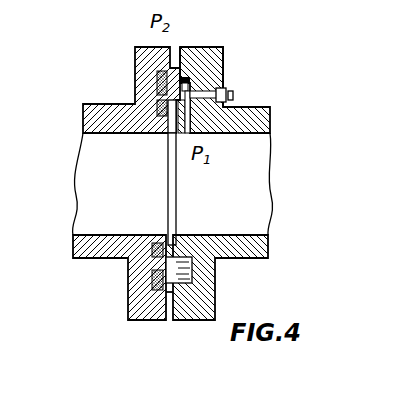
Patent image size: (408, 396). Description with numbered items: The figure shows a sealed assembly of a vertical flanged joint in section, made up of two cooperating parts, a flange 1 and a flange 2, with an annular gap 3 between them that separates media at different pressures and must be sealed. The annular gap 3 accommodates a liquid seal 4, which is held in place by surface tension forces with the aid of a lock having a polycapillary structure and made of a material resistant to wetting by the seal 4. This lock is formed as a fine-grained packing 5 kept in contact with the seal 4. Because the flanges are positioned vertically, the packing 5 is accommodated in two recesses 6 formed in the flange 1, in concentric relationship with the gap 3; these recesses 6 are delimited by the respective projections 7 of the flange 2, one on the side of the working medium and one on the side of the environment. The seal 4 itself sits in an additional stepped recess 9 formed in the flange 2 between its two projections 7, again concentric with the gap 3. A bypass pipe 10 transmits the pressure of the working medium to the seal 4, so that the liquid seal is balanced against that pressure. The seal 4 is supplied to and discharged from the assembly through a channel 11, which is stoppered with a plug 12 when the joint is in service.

The flange 1 is at (142, 110).
The flange 2 is at (225, 77).
The annular gap 3 is at (168, 206).
The liquid seal 4 is at (161, 133).
The fine-grained packing 5 is at (157, 72).
The recess 6 is at (152, 288).
The projection 7 is at (170, 250).
The stepped recess 9 is at (185, 75).
The bypass pipe 10 is at (209, 70).
The channel 11 is at (213, 105).
The plug 12 is at (233, 97).